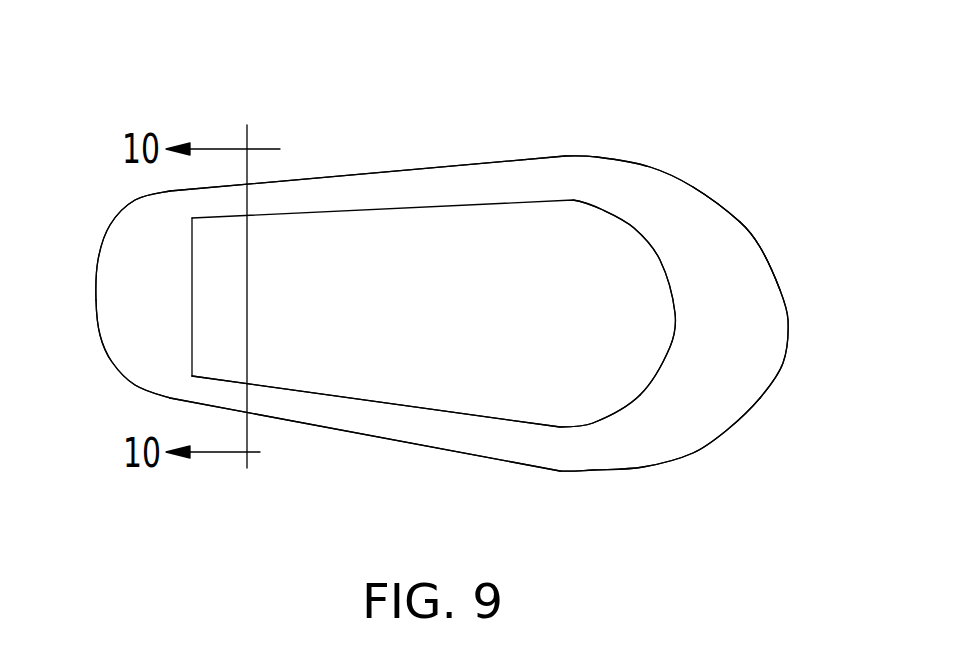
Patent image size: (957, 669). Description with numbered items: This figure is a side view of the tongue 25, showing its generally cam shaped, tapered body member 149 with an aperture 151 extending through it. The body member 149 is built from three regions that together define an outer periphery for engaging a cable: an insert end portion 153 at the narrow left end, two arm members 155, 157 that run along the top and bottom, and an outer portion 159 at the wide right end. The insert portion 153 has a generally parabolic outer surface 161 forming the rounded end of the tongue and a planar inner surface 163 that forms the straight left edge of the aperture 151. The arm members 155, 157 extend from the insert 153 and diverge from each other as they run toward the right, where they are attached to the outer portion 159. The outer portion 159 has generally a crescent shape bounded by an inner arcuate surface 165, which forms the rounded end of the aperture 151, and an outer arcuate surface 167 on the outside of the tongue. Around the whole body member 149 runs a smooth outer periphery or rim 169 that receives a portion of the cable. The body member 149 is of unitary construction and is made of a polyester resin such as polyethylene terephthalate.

The tongue 25 is at (582, 103).
The body member 149 is at (747, 210).
The aperture 151 is at (607, 418).
The insert end portion 153 is at (121, 323).
The arm member 155 is at (477, 178).
The arm member 157 is at (400, 424).
The outer portion 159 is at (760, 350).
The parabolic outer surface 161 is at (104, 254).
The planar inner surface 163 is at (193, 312).
The inner arcuate surface 165 is at (673, 318).
The outer arcuate surface 167 is at (760, 400).
The outer periphery or rim 169 is at (652, 165).